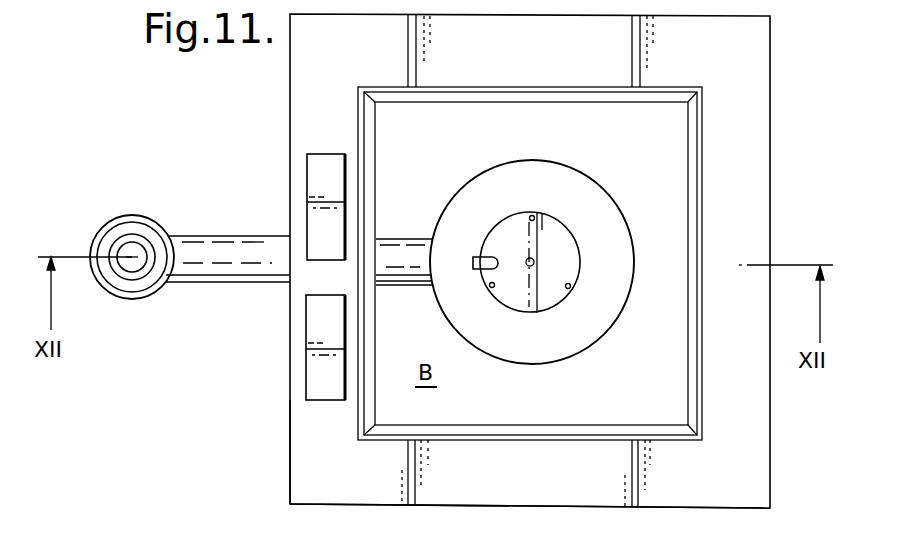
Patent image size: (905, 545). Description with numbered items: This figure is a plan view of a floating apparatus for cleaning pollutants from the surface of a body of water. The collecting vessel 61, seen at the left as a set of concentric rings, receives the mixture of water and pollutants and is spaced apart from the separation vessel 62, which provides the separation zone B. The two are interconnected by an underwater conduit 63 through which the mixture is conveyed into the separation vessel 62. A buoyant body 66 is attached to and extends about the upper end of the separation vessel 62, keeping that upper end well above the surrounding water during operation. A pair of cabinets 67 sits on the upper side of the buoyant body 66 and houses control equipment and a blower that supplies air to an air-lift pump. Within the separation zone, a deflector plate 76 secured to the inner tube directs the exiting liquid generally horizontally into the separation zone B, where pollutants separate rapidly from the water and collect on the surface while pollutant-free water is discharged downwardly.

The collecting vessel 61 is at (124, 214).
The separation vessel 62 is at (289, 135).
The underwater conduit 63 is at (232, 250).
The buoyant body 66 is at (295, 452).
The cabinets 67 is at (318, 238).
The deflector plate 76 is at (600, 315).